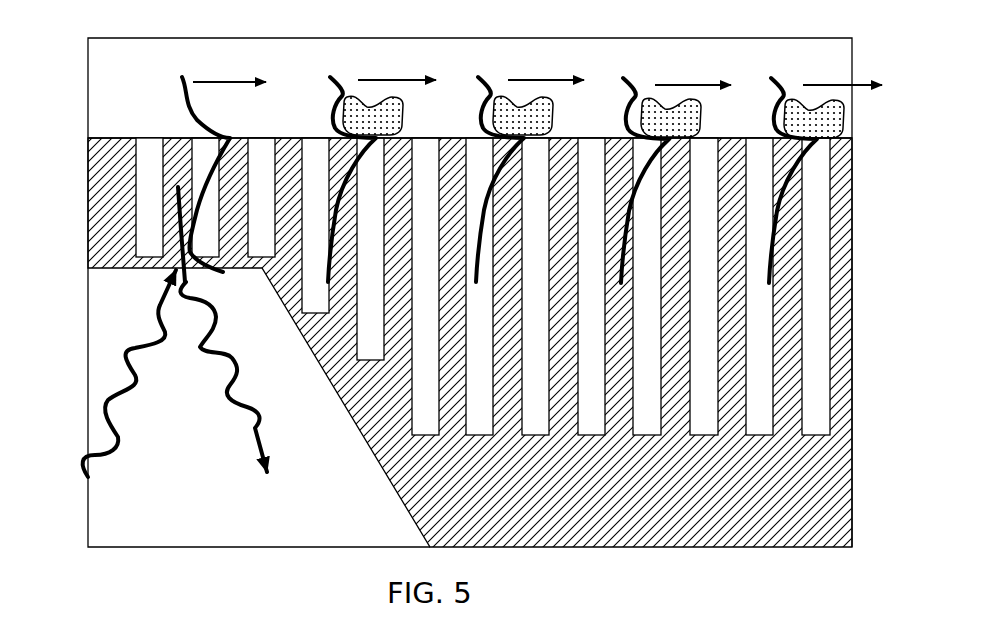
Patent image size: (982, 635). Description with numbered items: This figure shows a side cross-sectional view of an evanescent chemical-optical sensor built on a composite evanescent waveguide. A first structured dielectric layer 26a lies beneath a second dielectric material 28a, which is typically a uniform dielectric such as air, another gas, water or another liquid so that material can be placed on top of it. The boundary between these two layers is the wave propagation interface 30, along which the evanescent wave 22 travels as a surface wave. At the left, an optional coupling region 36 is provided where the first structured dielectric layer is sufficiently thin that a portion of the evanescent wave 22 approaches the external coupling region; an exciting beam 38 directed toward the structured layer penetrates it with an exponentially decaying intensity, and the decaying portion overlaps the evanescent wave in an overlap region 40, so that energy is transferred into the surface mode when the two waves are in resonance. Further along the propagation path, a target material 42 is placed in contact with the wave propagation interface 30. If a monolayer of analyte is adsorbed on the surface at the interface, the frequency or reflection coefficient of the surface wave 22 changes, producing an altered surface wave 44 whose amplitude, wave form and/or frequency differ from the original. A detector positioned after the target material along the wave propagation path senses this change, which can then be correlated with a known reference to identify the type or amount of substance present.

The evanescent wave 22 is at (195, 118).
The first structured dielectric layer 26a is at (86, 170).
The second dielectric material 28a is at (110, 92).
The wave propagation interface 30 is at (149, 134).
The coupling region 36 is at (198, 494).
The exciting beam 38 is at (132, 340).
The overlap region 40 is at (165, 228).
The target material 42 is at (782, 103).
The altered surface wave 44 is at (480, 78).